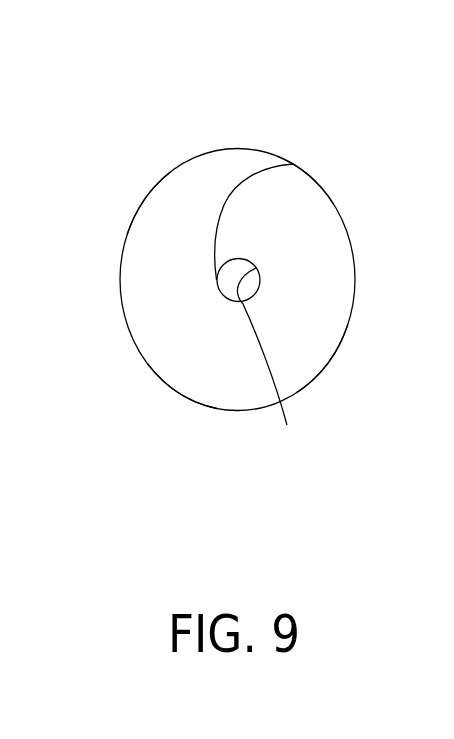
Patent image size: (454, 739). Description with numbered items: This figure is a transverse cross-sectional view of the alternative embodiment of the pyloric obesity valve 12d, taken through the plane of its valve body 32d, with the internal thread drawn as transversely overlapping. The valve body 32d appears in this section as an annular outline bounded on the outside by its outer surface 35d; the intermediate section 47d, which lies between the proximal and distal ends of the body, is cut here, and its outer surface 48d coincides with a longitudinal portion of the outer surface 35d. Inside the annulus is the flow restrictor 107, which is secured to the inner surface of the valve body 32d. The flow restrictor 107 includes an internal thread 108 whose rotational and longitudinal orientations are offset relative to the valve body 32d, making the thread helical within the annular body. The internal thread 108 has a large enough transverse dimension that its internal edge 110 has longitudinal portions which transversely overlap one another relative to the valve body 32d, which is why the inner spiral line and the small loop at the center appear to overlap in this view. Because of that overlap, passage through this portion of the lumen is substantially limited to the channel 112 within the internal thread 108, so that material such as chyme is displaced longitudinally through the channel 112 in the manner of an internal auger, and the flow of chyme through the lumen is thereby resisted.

The pyloric obesity valve 12d is at (231, 140).
The valve body 32d is at (149, 182).
The outer surface 35d is at (321, 166).
The intermediate section 47d is at (335, 376).
The outer surface 48d is at (185, 398).
The flow restrictor 107 is at (215, 198).
The internal thread 108 is at (198, 257).
The internal edge 110 is at (250, 183).
The channel 112 is at (240, 212).